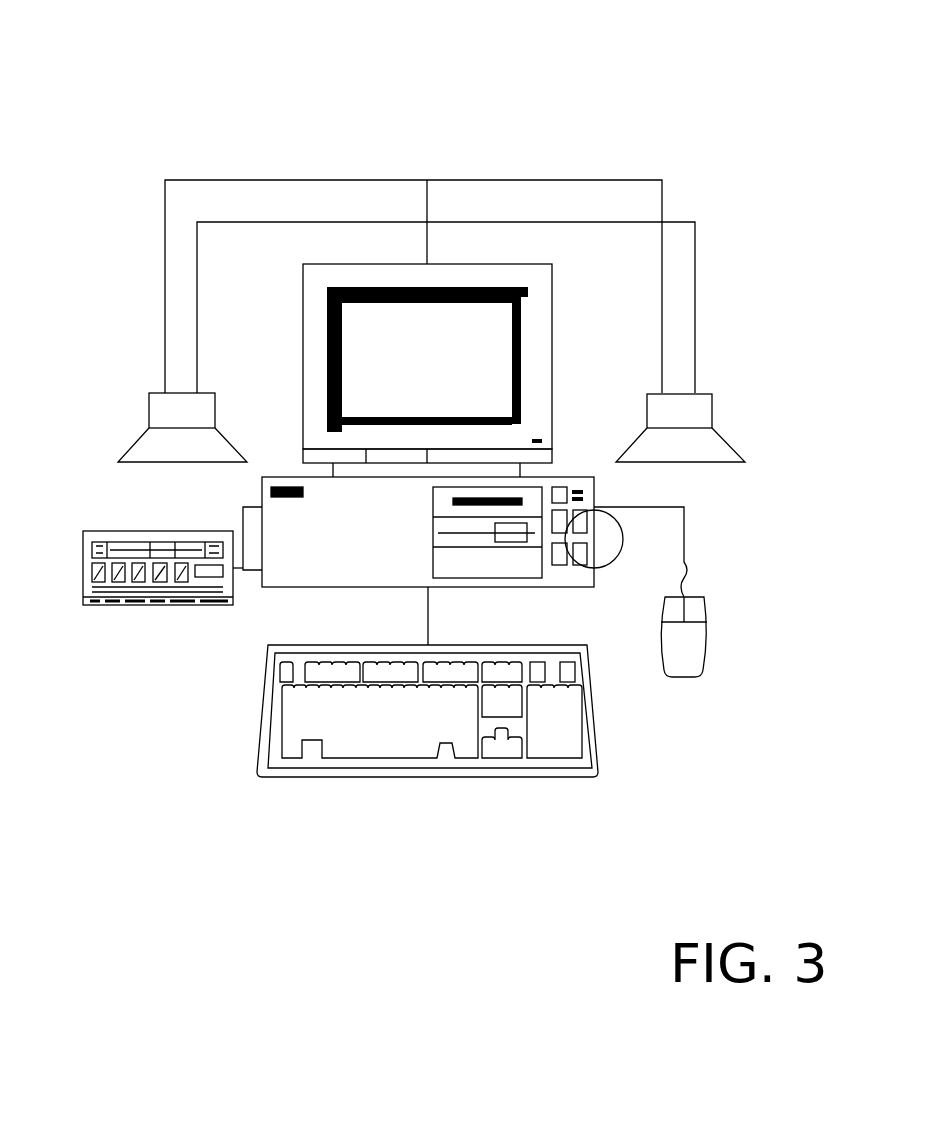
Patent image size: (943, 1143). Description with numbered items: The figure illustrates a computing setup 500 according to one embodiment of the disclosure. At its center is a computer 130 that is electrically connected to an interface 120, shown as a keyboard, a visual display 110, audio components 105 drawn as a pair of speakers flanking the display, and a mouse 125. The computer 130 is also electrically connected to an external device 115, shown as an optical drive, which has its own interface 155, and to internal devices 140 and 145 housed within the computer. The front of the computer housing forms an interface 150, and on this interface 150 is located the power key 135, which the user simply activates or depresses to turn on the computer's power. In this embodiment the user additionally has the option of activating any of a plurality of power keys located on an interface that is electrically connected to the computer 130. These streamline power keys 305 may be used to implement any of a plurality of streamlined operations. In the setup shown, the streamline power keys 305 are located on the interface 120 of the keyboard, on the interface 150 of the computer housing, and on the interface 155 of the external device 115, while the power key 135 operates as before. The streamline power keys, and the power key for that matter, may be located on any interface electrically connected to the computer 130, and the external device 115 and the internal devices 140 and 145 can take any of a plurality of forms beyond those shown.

The computing setup 500 is at (164, 82).
The audio components 105 is at (135, 455).
The visual display 110 is at (537, 315).
The interface 150 is at (394, 582).
The internal device 140 is at (452, 512).
The internal device 145 is at (480, 540).
The power key 135 is at (557, 486).
The streamline power keys 305 is at (583, 520).
The mouse 125 is at (692, 653).
The interface 120 is at (596, 774).
The external device 115 is at (177, 634).
The interface 155 is at (90, 600).
The computer 130 is at (275, 605).